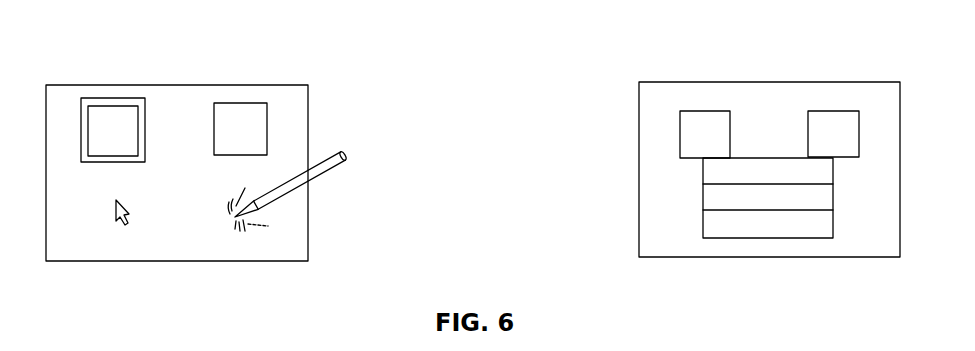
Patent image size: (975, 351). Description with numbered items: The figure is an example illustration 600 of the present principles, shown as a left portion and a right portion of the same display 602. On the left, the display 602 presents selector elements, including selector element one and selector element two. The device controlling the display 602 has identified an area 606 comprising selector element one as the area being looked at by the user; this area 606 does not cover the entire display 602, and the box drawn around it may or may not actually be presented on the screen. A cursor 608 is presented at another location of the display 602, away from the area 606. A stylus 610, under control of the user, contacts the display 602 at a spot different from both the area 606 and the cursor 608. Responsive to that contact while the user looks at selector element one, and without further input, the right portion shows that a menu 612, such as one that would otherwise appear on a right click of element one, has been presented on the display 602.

The example illustration 600 is at (407, 68).
The display 602 is at (262, 85).
The area 606 is at (145, 122).
The cursor 608 is at (131, 206).
The stylus 610 is at (317, 181).
The menu 612 is at (837, 198).